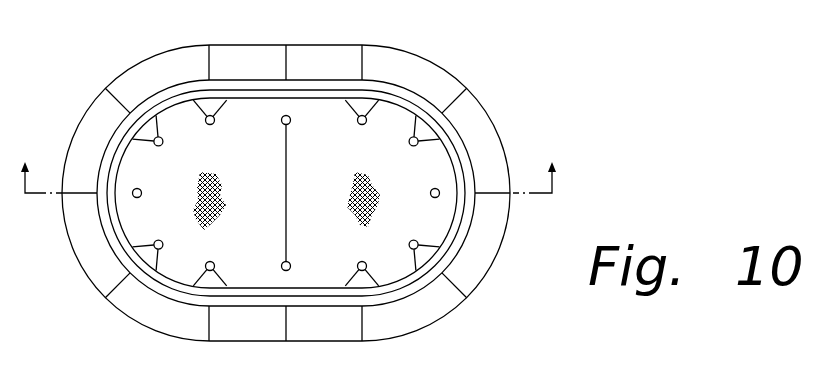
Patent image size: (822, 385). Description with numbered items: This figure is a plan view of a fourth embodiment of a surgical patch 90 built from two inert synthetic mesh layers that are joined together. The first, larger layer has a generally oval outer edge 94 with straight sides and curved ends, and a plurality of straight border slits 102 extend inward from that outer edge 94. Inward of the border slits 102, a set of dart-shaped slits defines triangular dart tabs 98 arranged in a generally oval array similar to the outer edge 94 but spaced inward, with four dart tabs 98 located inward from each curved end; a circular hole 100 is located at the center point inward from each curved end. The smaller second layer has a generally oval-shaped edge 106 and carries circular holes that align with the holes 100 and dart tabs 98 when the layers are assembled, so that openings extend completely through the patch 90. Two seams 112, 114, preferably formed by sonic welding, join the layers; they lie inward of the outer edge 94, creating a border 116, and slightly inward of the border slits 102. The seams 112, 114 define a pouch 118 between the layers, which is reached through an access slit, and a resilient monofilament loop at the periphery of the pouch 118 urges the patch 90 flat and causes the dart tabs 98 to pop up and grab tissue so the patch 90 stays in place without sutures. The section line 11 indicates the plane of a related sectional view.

The fourth embodiment of patch 90 is at (550, 88).
The outer edge 94 is at (433, 323).
The dart tab 98 is at (207, 278).
The circular hole 100 is at (110, 215).
The border slit 102 is at (78, 197).
The oval-shaped edge 106 is at (470, 230).
The seam 112 is at (115, 252).
The seam 114 is at (272, 287).
The border 116 is at (432, 65).
The pouch 118 is at (302, 123).
The section line 11- 11 is at (291, 165).